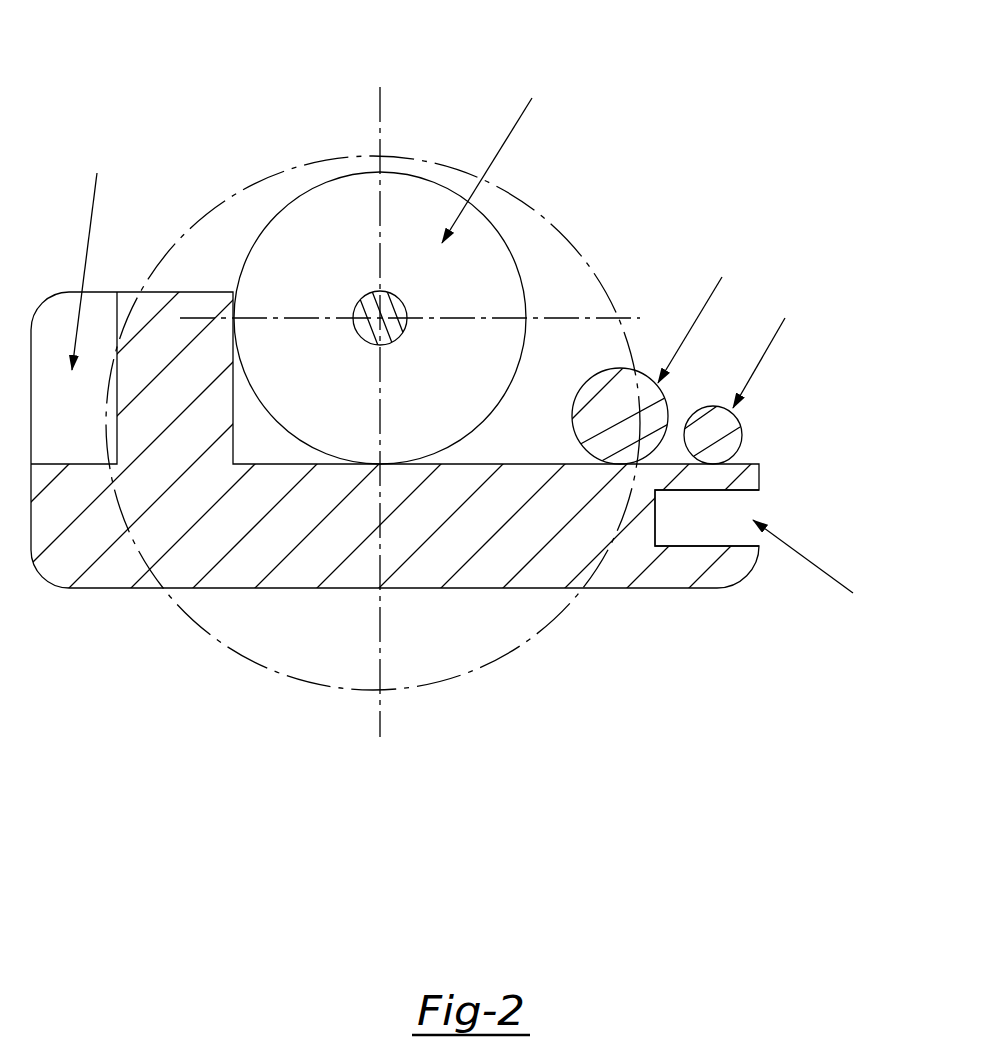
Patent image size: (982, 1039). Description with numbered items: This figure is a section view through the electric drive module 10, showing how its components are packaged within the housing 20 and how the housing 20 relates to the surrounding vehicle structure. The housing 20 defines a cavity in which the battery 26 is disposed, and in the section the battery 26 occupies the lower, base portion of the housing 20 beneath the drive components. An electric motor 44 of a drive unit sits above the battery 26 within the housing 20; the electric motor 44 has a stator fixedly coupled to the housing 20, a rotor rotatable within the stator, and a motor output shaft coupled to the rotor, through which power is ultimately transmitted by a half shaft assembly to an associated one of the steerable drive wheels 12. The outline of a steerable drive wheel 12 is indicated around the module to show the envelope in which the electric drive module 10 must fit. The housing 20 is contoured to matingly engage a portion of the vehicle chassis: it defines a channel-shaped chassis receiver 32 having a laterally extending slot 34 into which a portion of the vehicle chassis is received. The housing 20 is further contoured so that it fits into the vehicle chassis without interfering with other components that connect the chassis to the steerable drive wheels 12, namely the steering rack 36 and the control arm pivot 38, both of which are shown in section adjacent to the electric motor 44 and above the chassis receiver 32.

The electric drive module 10 is at (491, 421).
The steerable drive wheels 12 is at (248, 188).
The housing 20 is at (491, 534).
The battery 26 is at (430, 538).
The chassis receiver 32 is at (660, 593).
The slot 34 is at (713, 509).
The steering rack 36 is at (620, 388).
The control arm pivot 38 is at (735, 436).
The electric motor 44 is at (347, 210).